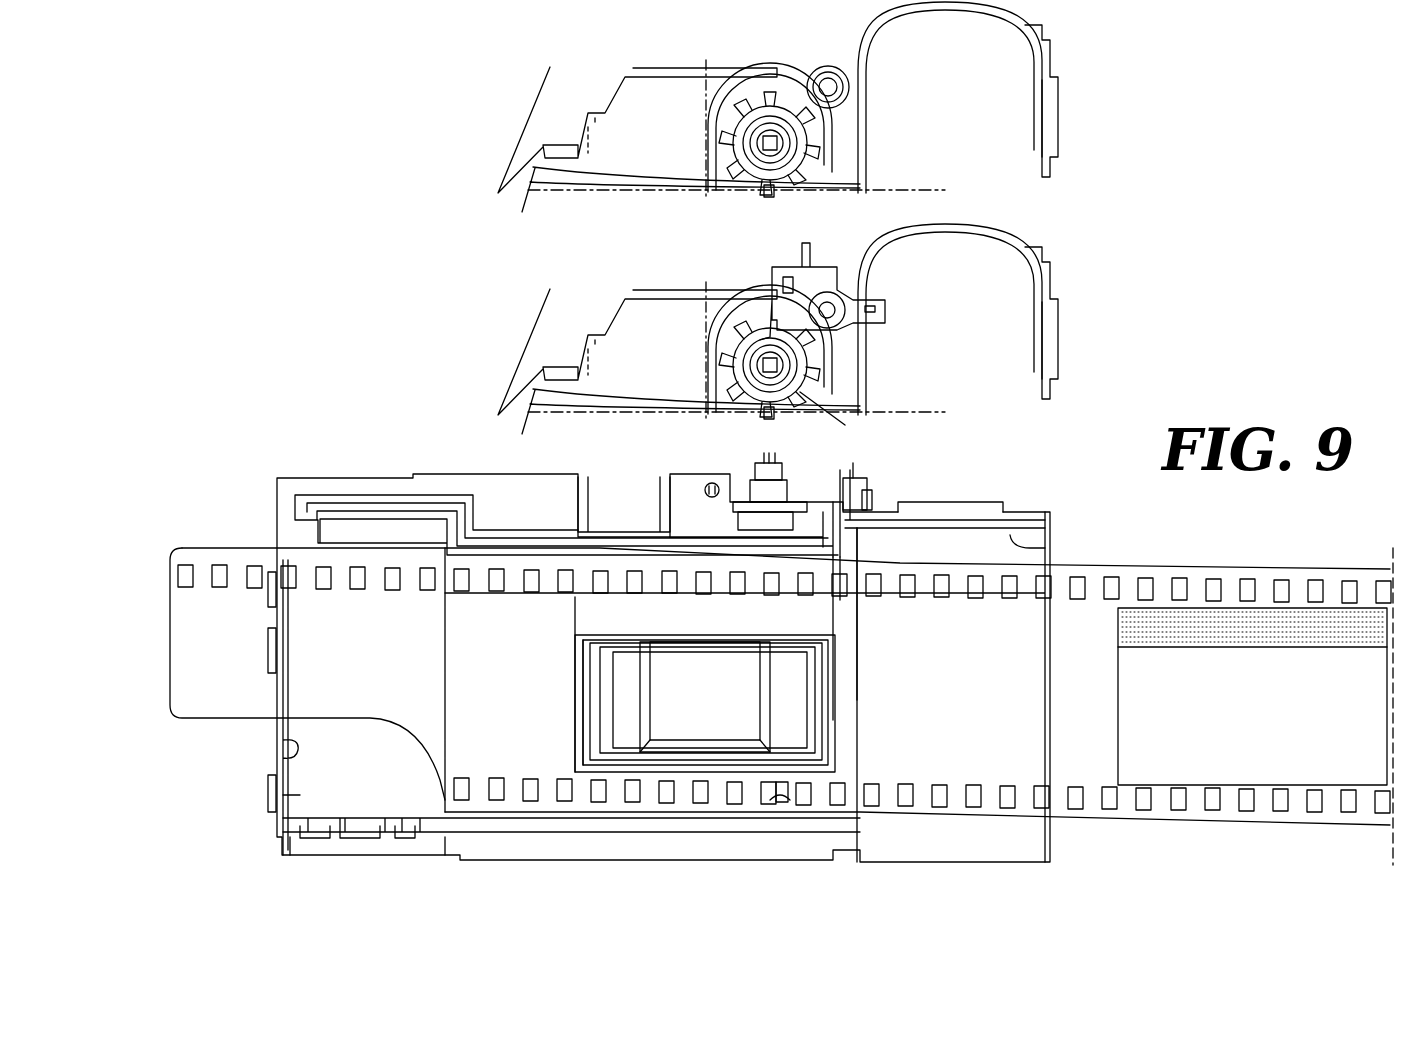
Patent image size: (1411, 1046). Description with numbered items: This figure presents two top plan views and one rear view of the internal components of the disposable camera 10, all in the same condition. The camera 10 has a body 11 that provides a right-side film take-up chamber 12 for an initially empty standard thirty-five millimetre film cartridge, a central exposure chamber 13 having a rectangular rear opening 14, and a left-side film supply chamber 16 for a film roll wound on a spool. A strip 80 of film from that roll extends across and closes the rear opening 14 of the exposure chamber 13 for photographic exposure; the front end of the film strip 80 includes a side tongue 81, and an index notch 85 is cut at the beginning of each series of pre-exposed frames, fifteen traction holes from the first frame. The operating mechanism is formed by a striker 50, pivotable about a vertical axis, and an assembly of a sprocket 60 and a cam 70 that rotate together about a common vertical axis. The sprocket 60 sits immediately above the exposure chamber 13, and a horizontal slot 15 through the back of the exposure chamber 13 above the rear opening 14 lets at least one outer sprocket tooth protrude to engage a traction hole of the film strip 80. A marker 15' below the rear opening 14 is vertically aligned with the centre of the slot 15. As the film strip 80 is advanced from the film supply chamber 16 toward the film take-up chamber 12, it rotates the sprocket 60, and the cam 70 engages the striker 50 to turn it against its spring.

The disposable camera 10 is at (300, 390).
The body 11 is at (413, 408).
The film take-up chamber 12 is at (1032, 118).
The exposure chamber 13 is at (660, 96).
The rear opening 14 is at (585, 647).
The horizontal slot 15 is at (872, 624).
The marker 15' is at (768, 848).
The film supply chamber 16 is at (292, 742).
The striker 50 is at (862, 226).
The sprocket 60 is at (783, 105).
The cam 70 is at (858, 445).
The film strip 80 is at (900, 190).
The side tongue 81 is at (195, 718).
The index notch 85 is at (760, 800).